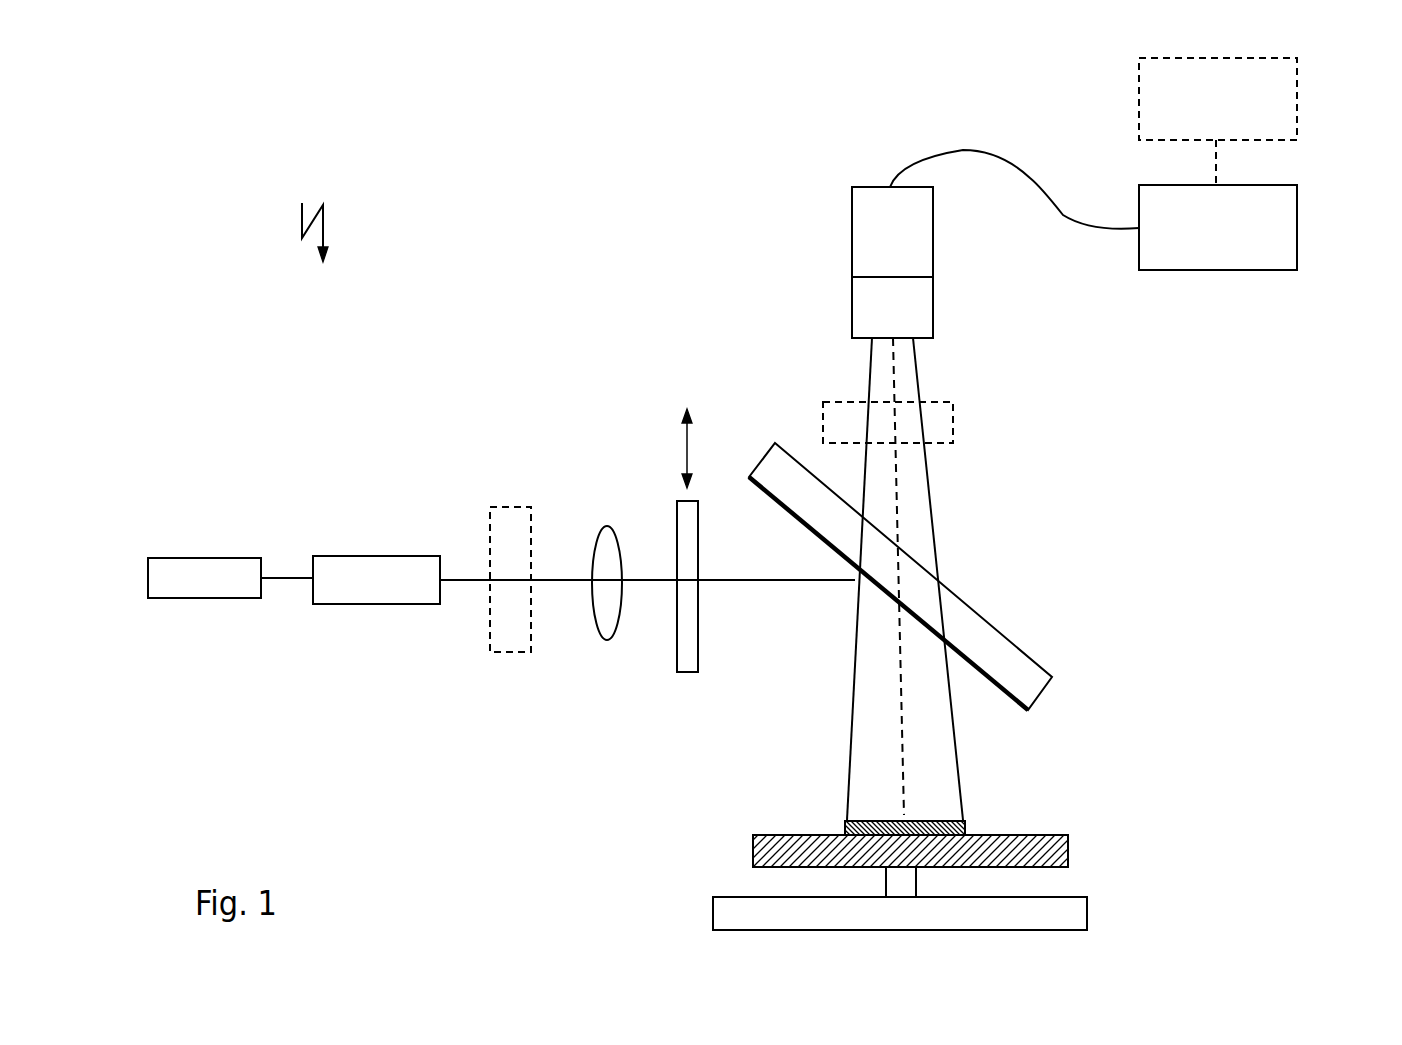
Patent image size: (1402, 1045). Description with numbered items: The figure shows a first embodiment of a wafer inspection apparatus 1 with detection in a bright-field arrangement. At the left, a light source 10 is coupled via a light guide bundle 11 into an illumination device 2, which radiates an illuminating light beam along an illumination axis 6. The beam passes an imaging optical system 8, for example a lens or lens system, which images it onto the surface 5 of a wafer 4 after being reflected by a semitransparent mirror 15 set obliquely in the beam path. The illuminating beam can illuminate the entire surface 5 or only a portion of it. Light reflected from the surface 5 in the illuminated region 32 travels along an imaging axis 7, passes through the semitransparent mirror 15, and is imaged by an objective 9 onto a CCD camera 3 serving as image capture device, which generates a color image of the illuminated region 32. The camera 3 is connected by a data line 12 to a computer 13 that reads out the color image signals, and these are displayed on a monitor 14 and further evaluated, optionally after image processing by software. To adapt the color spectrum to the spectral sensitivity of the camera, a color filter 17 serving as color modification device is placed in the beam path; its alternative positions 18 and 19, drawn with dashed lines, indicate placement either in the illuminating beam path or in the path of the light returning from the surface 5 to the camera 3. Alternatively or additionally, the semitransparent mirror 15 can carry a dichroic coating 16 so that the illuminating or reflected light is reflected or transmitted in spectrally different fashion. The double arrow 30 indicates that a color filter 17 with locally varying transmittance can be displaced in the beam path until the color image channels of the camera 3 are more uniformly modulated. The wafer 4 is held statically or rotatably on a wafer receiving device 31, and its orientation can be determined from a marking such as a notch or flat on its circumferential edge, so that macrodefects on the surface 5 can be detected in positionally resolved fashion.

The wafer inspection apparatus 1 is at (306, 204).
The illumination device 2 is at (370, 568).
The CCD camera 3 is at (918, 233).
The wafer 4 is at (1068, 847).
The surface 5 is at (767, 832).
The illumination axis 6 is at (788, 582).
The imaging axis 7 is at (908, 738).
The imaging optical system 8 is at (610, 547).
The objective 9 is at (918, 313).
The light source 10 is at (193, 570).
The light guide bundle 11 is at (292, 580).
The data line 12 is at (1006, 163).
The computer 13 is at (1283, 230).
The monitor 14 is at (1283, 93).
The semitransparent mirror 15 is at (998, 647).
The dichroic coating 16 is at (930, 622).
The color filter 17 is at (698, 545).
The position 18 is at (511, 523).
The position 19 is at (930, 418).
The double arrow 30 is at (687, 440).
The wafer receiving device 31 is at (1077, 910).
The illuminated region 32 is at (963, 813).